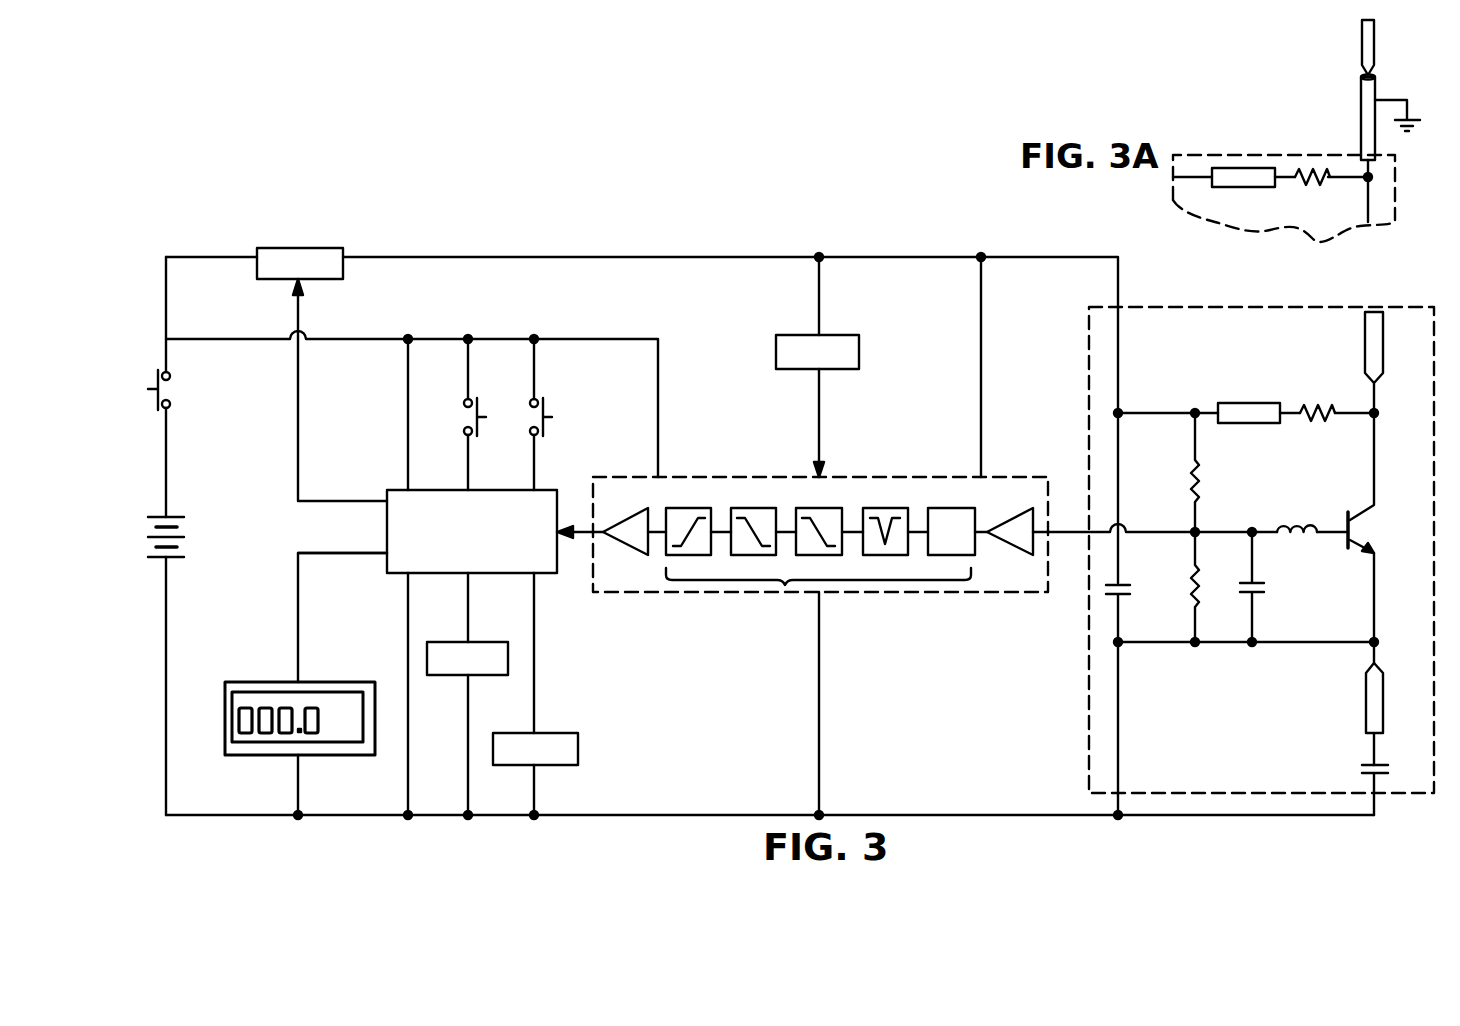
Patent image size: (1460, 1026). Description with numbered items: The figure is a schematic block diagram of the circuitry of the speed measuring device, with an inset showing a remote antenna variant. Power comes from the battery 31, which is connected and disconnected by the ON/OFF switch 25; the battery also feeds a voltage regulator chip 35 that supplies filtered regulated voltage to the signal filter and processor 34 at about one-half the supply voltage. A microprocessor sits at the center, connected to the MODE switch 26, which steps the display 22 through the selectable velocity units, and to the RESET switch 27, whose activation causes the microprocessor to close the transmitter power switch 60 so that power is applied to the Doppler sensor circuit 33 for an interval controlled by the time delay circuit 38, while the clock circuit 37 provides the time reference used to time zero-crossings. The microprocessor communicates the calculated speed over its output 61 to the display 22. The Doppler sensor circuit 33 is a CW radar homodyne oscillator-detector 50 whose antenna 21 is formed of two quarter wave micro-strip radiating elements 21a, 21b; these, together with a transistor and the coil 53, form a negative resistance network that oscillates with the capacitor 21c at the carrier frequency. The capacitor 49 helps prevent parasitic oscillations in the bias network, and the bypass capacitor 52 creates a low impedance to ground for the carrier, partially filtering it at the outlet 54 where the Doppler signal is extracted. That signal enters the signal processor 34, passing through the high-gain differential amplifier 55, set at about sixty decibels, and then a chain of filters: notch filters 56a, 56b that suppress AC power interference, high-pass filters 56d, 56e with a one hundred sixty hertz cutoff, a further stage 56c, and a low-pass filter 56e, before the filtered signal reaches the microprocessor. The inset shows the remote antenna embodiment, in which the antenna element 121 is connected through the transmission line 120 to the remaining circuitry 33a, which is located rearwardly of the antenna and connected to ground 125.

In FIG. 3, the transmitter power switch 60 is at (313, 248).
In FIG. 3, the ON/OFF switch 25 is at (172, 405).
In FIG. 3, the MODE switch 26 is at (478, 402).
In FIG. 3, the RESET switch 27 is at (552, 406).
In FIG. 3, the battery 31 is at (186, 540).
In FIG. 3, the output 61 is at (345, 553).
In FIG. 3, the display 22 is at (254, 692).
In FIG. 3, the clock circuit 37 is at (480, 642).
In FIG. 3, the time delay circuit 38 is at (560, 733).
In FIG. 3, the voltage regulator chip 35 is at (796, 337).
In FIG. 3, the signal filter and processor 34 is at (621, 477).
In FIG. 3, the notch filter 56a is at (975, 516).
In FIG. 3, the notch filter 56b is at (903, 508).
In FIG. 3, the 160Hz low-pass filter 56c is at (842, 518).
In FIG. 3, the high-pass filter 56d is at (757, 508).
In FIG. 3, the high-pass filter / low-pass filter 56e is at (686, 555).
In FIG. 3, the differential amplifier 55 is at (1018, 542).
In FIG. 3, the Doppler sensor circuit 33 is at (1155, 307).
In FIG. 3A, the Doppler sensor circuit 33 is at (1309, 131).
In FIG. 3A, the remaining circuitry 33a is at (1276, 155).
In FIG. 3, the strip transmission line resonator/antenna 21 is at (1361, 563).
In FIG. 3, the radiating element 21a is at (1365, 370).
In FIG. 3, the radiating element 21b is at (1366, 711).
In FIG. 3, the capacitor 21c is at (1363, 769).
In FIG. 3, the oscillator-detector 50 is at (1291, 482).
In FIG. 3A, the oscillator-detector 50 is at (1332, 217).
In FIG. 3, the outlet 54 is at (1090, 532).
In FIG. 3, the capacitor 49 is at (1132, 590).
In FIG. 3, the bypass capacitor 52 is at (1266, 588).
In FIG. 3, the coil 53 is at (1292, 536).
In FIG. 3A, the transmission line 120 is at (1361, 106).
In FIG. 3A, the antenna element 121 is at (1362, 56).
In FIG. 3A, the ground 125 is at (1396, 100).